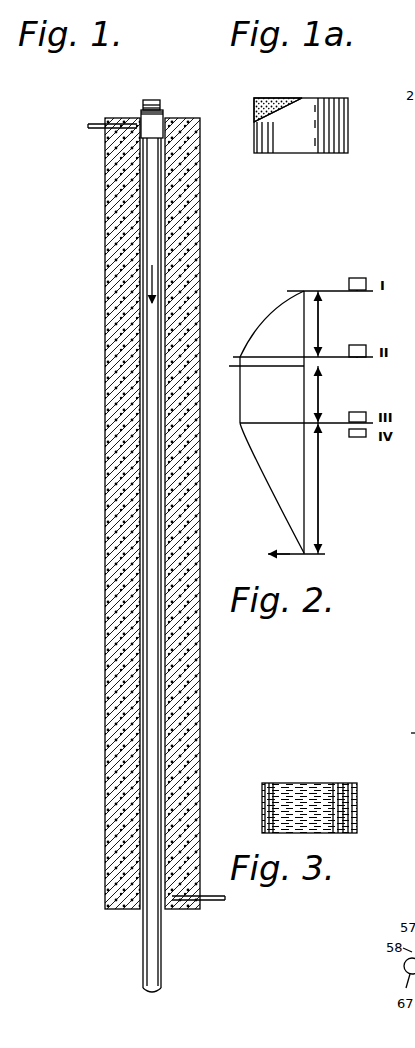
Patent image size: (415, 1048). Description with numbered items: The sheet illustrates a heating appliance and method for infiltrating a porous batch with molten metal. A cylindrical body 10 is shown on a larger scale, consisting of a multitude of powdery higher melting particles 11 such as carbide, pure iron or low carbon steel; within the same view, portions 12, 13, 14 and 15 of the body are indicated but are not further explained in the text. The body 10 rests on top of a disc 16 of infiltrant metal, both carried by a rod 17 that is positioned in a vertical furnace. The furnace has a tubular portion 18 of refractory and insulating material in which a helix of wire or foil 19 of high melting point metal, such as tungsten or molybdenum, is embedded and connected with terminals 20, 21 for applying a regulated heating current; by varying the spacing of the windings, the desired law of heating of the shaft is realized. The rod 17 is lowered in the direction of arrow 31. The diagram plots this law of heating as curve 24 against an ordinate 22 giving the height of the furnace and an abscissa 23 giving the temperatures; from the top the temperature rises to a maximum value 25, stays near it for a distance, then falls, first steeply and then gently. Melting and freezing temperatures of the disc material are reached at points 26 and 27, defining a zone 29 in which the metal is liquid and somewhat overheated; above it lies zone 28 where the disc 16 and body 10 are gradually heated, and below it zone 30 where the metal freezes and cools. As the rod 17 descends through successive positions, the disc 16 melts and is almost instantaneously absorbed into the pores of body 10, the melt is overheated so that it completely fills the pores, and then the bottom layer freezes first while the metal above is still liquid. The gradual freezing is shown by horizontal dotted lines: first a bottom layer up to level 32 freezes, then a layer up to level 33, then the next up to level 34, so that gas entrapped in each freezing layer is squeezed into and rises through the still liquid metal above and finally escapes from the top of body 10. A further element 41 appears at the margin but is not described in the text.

In FIG. 1, the cylindrical body 10 is at (153, 98).
In FIG. 1A, the cylindrical body 10 is at (334, 156).
In FIG. 2, the cylindrical body 10 is at (357, 278).
In FIG. 3, the cylindrical body 10 is at (262, 810).
In FIG. 1A, the powdery higher melting particles 11 is at (257, 108).
In FIG. 1A, the boundary surface 12 is at (283, 100).
In FIG. 1, the body of element 13 is at (152, 124).
In FIG. 1A, the body of element 13 is at (295, 154).
In FIG. 1, the head portion 14 is at (160, 101).
In FIG. 1A, the head portion 14 is at (330, 99).
In FIG. 1, the end face 15 is at (143, 103).
In FIG. 1A, the end face 15 is at (256, 132).
In FIG. 1, the disc 16 is at (163, 112).
In FIG. 2, the disc 16 is at (361, 292).
In FIG. 1, the rod 17 is at (150, 390).
In FIG. 1, the tubular portion 18 is at (112, 293).
In FIG. 1, the helix of wire or foil 19 is at (130, 194).
In FIG. 1, the terminal 20 is at (90, 129).
In FIG. 1, the terminal 21 is at (215, 902).
In FIG. 2, the ordinate 22 is at (302, 400).
In FIG. 2, the abscissa 23 is at (296, 553).
In FIG. 2, the curve 24 is at (278, 318).
In FIG. 2, the maximum value 25 is at (278, 367).
In FIG. 2, the point 26 is at (240, 410).
In FIG. 2, the point 27 is at (247, 442).
In FIG. 2, the zone 28 is at (326, 324).
In FIG. 2, the zone 29 is at (325, 394).
In FIG. 2, the zone 30 is at (326, 488).
In FIG. 1, the arrow 31 is at (152, 284).
In FIG. 3, the level 32 is at (358, 830).
In FIG. 3, the level 33 is at (357, 825).
In FIG. 3, the level 34 is at (356, 818).
In FIG. 3, the adjacent element 41 is at (414, 735).